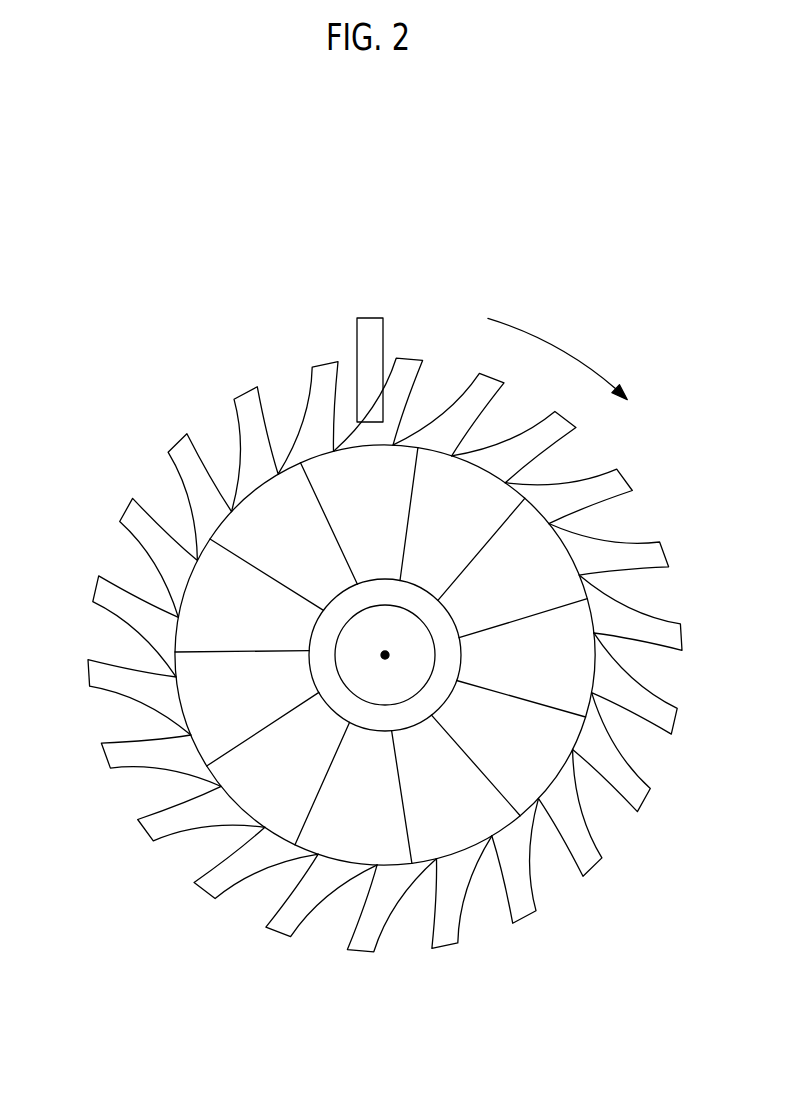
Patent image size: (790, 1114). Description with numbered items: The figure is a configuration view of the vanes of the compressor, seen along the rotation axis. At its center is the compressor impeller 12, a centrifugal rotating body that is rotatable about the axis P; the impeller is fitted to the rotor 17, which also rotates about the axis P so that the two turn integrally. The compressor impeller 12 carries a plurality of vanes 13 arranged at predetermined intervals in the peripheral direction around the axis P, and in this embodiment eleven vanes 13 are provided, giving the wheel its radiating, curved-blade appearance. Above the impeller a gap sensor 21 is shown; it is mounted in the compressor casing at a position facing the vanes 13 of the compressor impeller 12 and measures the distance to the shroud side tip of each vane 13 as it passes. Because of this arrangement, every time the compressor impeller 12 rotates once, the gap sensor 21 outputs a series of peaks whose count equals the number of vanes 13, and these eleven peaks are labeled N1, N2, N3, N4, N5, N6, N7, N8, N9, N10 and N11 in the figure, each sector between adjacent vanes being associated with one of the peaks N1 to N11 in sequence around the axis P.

The compressor impeller 12 is at (182, 373).
The vane 13 is at (203, 588).
The rotor 17 is at (353, 673).
The gap sensor 21 is at (367, 318).
The axis P is at (388, 657).
The peak N1 is at (418, 441).
The peak N2 is at (285, 460).
The peak N3 is at (191, 531).
The peak N4 is at (173, 655).
The peak N5 is at (201, 788).
The peak N6 is at (285, 859).
The peak N7 is at (419, 863).
The peak N8 is at (545, 822).
The peak N9 is at (598, 722).
The peak N10 is at (585, 587).
The peak N11 is at (529, 474).